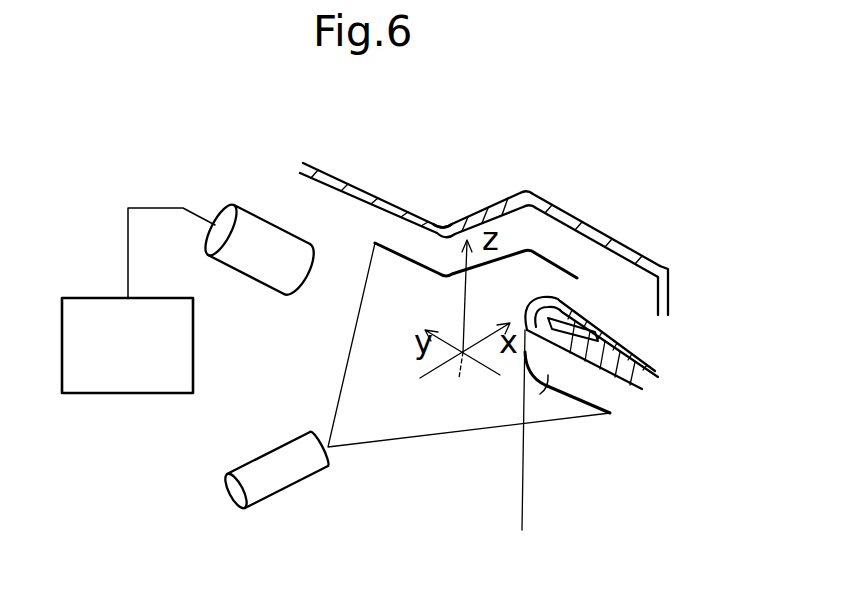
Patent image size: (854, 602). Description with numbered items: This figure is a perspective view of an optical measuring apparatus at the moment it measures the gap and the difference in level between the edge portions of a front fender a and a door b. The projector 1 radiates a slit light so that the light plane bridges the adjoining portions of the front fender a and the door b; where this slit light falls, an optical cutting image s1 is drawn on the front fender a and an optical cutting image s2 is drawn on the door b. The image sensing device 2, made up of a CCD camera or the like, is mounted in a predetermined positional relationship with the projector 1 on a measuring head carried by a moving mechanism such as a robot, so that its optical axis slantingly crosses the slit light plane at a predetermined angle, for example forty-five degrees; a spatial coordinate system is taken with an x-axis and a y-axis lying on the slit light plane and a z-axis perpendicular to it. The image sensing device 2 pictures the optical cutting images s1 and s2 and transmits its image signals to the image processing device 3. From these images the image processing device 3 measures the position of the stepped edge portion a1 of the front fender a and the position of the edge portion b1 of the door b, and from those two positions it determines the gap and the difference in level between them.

The projector 1 is at (295, 477).
The image sensing device 2 is at (242, 210).
The image processing device 3 is at (143, 378).
The front fender a is at (387, 202).
The stepped edge portion a1 is at (445, 230).
The door b is at (587, 342).
The edge portion b1 is at (530, 300).
The optical cutting image s1 is at (418, 268).
The optical cutting image s2 is at (548, 384).